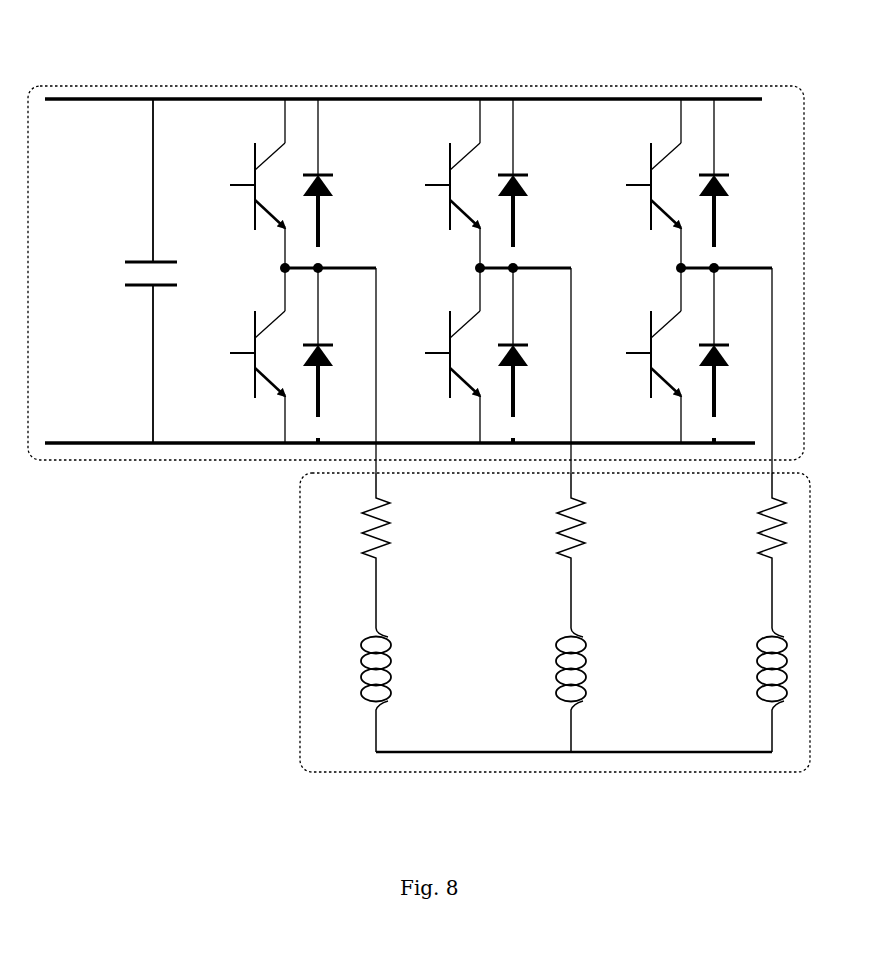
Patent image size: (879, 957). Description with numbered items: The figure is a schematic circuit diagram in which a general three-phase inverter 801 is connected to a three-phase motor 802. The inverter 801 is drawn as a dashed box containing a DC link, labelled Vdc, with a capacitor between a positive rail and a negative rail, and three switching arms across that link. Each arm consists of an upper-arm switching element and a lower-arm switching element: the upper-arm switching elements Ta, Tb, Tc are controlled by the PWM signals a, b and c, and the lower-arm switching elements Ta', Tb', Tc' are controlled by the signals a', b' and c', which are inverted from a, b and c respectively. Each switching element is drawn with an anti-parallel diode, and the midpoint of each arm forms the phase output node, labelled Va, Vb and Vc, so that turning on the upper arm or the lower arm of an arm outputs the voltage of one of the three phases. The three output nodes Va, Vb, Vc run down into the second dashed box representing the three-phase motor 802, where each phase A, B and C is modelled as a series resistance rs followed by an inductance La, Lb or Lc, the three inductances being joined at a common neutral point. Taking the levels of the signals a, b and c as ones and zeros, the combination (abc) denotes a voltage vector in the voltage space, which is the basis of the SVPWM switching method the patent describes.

The inverter 801 is at (416, 239).
The three-phase motor 802 is at (555, 661).
The DC link capacitor / DC bus voltage Vdc is at (116, 271).
The upper-arm switching element Ta is at (244, 186).
The lower-arm switching element Ta' is at (244, 354).
The upper-arm switching element Tb is at (440, 186).
The lower-arm switching element Tb' is at (440, 354).
The upper-arm switching element Tc is at (642, 186).
The lower-arm switching element Tc' is at (642, 354).
The phase a output node Va is at (302, 269).
The phase b output node Vb is at (498, 269).
The phase c output node Vc is at (700, 269).
The stator resistance rs is at (555, 531).
The phase a inductance La is at (356, 671).
The phase b inductance Lb is at (551, 671).
The phase c inductance Lc is at (753, 671).